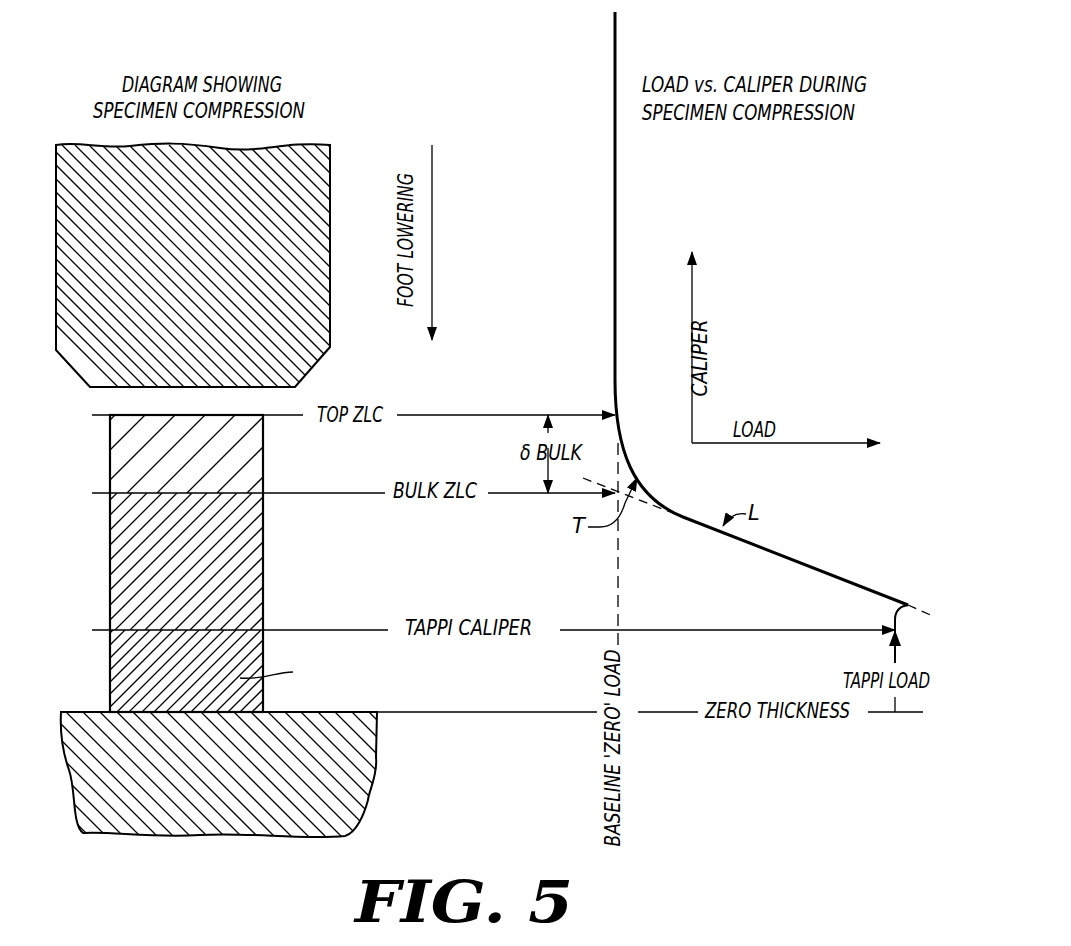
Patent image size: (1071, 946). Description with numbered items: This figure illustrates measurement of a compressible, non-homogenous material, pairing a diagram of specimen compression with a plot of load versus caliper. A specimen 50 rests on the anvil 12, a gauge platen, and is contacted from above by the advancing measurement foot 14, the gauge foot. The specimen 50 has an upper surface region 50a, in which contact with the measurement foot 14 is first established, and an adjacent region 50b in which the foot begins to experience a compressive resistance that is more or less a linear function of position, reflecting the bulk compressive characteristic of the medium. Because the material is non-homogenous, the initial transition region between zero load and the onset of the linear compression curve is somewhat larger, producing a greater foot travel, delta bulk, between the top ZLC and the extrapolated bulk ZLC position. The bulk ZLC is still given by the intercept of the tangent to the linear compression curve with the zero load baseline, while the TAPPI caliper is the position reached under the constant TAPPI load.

The anvil 12 is at (348, 787).
The measurement foot 14 is at (380, 384).
The specimen 50 is at (193, 563).
The upper surface region 50a is at (240, 452).
The adjacent region 50b is at (240, 557).